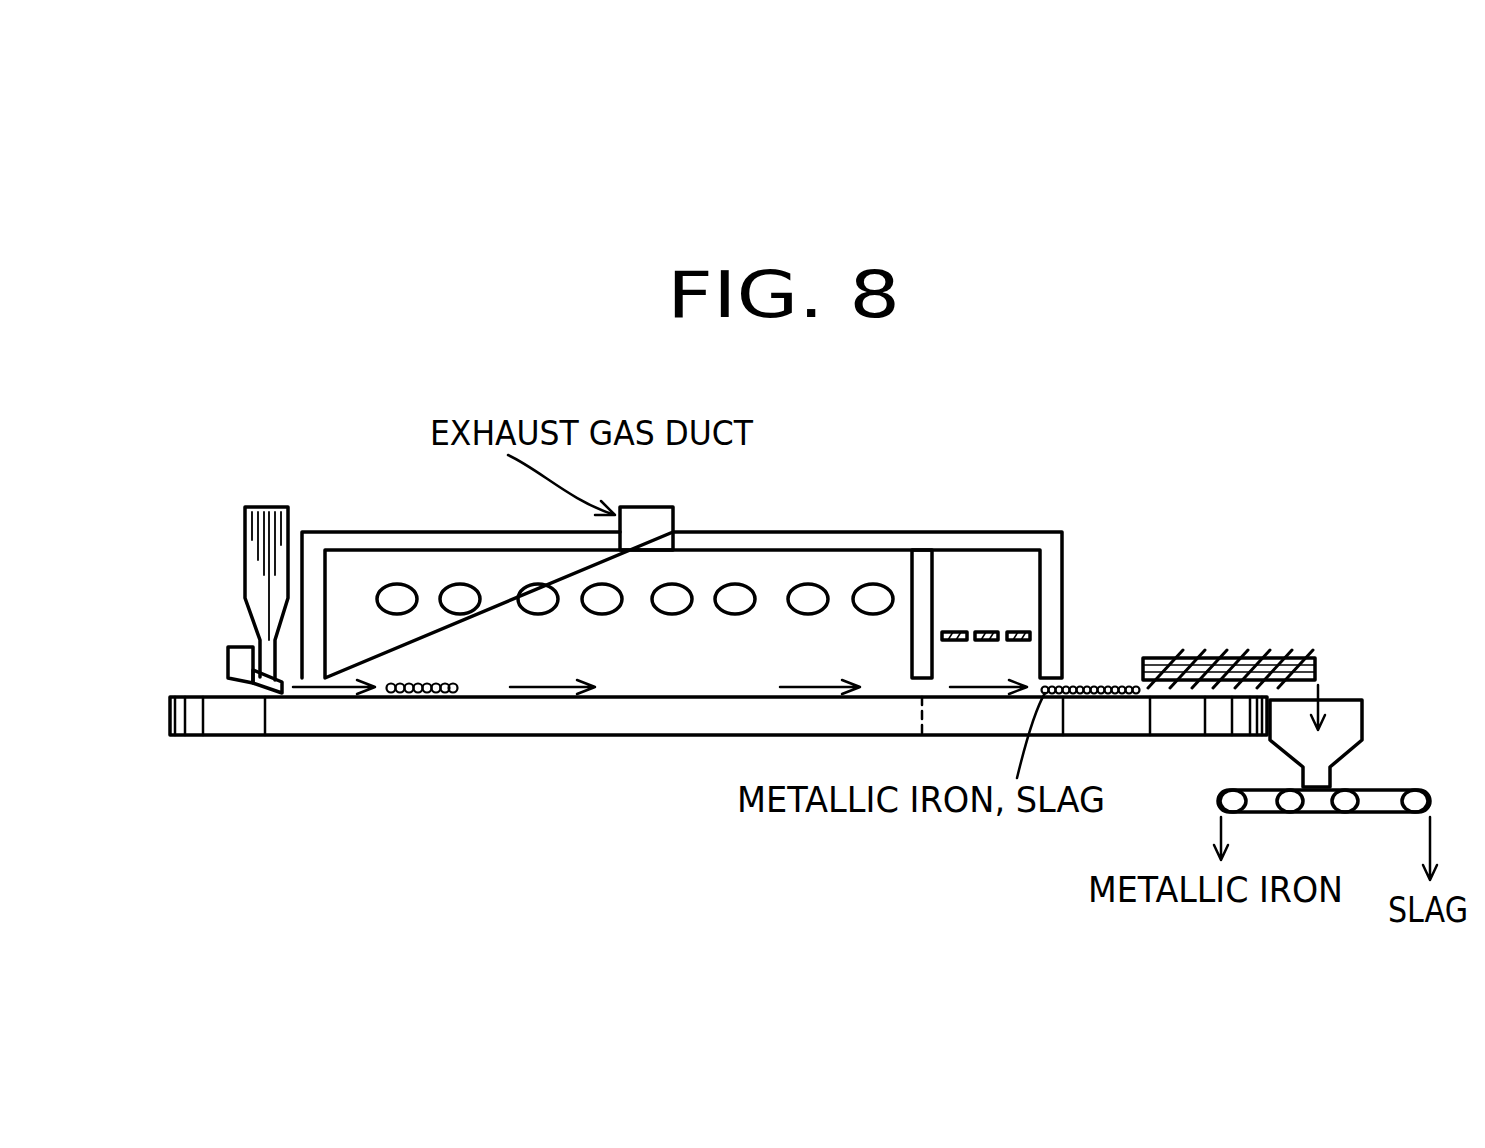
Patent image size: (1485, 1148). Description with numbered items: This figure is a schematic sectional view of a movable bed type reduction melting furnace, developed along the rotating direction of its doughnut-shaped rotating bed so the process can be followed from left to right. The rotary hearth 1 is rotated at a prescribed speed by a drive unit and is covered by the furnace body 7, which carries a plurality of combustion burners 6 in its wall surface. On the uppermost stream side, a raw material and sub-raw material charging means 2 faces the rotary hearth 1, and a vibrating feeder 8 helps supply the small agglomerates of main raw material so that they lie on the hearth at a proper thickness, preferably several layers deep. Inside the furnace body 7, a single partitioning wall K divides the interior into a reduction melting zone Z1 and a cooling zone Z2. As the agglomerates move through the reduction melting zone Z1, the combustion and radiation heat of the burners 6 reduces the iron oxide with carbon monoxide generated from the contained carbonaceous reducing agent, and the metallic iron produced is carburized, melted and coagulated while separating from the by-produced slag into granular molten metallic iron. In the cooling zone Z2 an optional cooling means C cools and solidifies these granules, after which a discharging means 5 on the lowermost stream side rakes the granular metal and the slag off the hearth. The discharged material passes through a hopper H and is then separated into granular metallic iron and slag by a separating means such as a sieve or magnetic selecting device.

The rotary hearth 1 is at (412, 718).
The raw material and sub-raw material charging means 2 is at (250, 560).
The discharging means 5 is at (1243, 645).
The combustion burners 6 is at (460, 603).
The furnace body 7 is at (742, 532).
The vibrating feeder 8 is at (235, 660).
The partitioning wall K is at (922, 560).
The reduction melting zone Z1 is at (662, 668).
The cooling zone Z2 is at (986, 582).
The cooling means C is at (988, 630).
The hopper H is at (1350, 720).